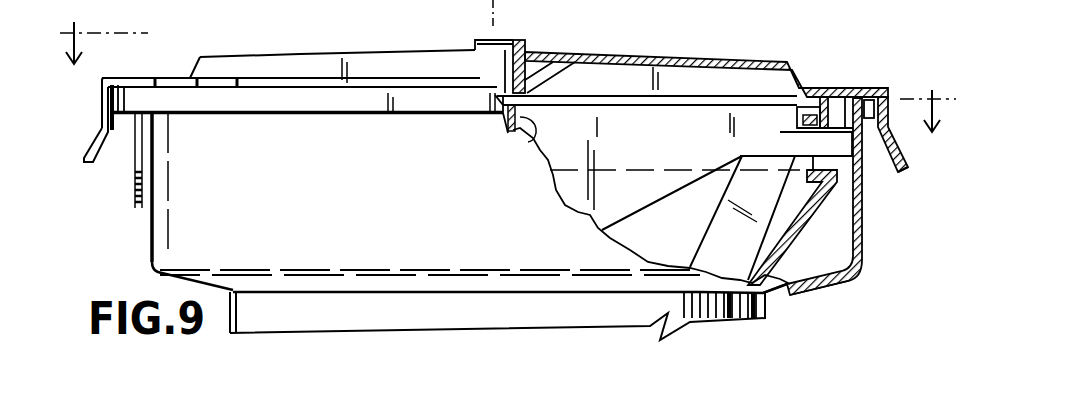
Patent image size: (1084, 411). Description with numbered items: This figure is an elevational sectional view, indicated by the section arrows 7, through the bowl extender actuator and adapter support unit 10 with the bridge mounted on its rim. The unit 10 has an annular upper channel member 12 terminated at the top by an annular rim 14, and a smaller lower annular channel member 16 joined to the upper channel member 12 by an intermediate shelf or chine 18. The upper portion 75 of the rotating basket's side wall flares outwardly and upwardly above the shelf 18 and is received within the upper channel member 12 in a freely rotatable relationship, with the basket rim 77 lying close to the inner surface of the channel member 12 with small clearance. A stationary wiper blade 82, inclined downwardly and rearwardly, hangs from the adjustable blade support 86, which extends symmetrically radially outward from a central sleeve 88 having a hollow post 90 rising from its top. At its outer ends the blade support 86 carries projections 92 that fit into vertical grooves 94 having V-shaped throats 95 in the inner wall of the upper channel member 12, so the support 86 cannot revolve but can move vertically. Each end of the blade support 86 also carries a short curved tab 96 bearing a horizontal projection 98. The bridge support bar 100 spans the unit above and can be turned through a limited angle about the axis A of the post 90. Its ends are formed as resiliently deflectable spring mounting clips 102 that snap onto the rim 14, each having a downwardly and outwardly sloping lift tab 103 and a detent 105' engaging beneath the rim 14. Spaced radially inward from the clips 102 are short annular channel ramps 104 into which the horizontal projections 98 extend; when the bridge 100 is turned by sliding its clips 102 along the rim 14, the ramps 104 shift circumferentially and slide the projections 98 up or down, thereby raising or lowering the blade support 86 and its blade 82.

The section line 7- 7 is at (508, 66).
The axis A is at (489, 14).
The bowl extender actuator and adapter support unit 10 is at (872, 278).
The annular upper channel member 12 is at (866, 228).
The annular rim 14 is at (313, 105).
The lower annular channel member 16 is at (228, 328).
The intermediate shelf or chine 18 is at (788, 285).
The upper portion of the side wall 75 is at (812, 278).
The rim of the rotating basket 77 is at (822, 186).
The wiper blade 82 is at (748, 243).
The adjustable blade support 86 is at (640, 163).
The central sleeve 88 is at (528, 124).
The hollow post 90 is at (517, 47).
The projection 92 is at (862, 212).
The vertical groove 94 is at (862, 235).
The V-shaped throat 95 is at (847, 110).
The curved tab 96 is at (805, 117).
The horizontal projection 98 is at (820, 110).
The bridge support bar 100 is at (380, 68).
The spring mounting clip 102 is at (102, 97).
The lift tab 103 is at (92, 163).
The annular channel ramp 104 is at (797, 128).
The detent 105' is at (527, 154).